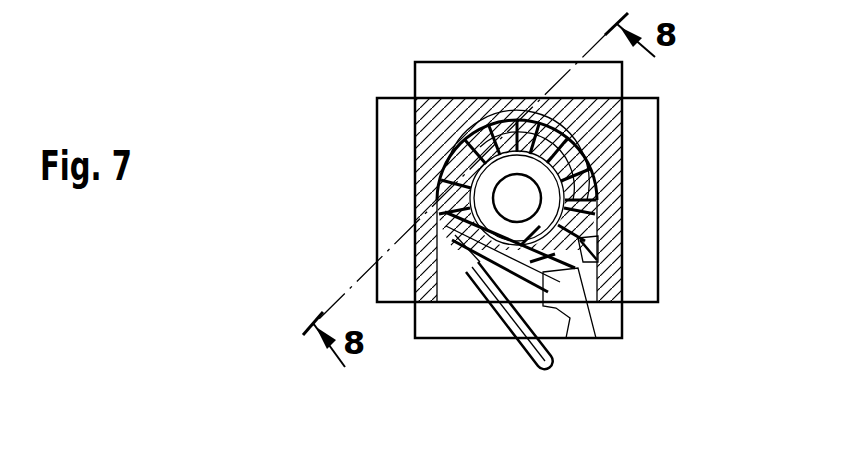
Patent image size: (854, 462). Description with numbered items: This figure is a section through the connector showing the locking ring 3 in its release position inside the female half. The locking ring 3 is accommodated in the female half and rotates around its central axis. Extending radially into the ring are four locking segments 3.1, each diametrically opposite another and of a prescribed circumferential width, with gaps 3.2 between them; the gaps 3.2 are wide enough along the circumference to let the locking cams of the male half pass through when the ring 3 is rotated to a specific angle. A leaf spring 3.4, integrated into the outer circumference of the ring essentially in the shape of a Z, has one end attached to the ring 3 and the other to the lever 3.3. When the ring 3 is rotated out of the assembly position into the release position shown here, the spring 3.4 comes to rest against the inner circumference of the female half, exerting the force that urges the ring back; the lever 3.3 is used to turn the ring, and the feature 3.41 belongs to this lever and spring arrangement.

The locking ring 3 is at (530, 270).
The locking segment 3.1 is at (460, 192).
The gap 3.2 is at (582, 157).
The lever 3.3 is at (540, 367).
The leaf spring 3.4 is at (578, 272).
The lever lug 3.41 is at (590, 250).